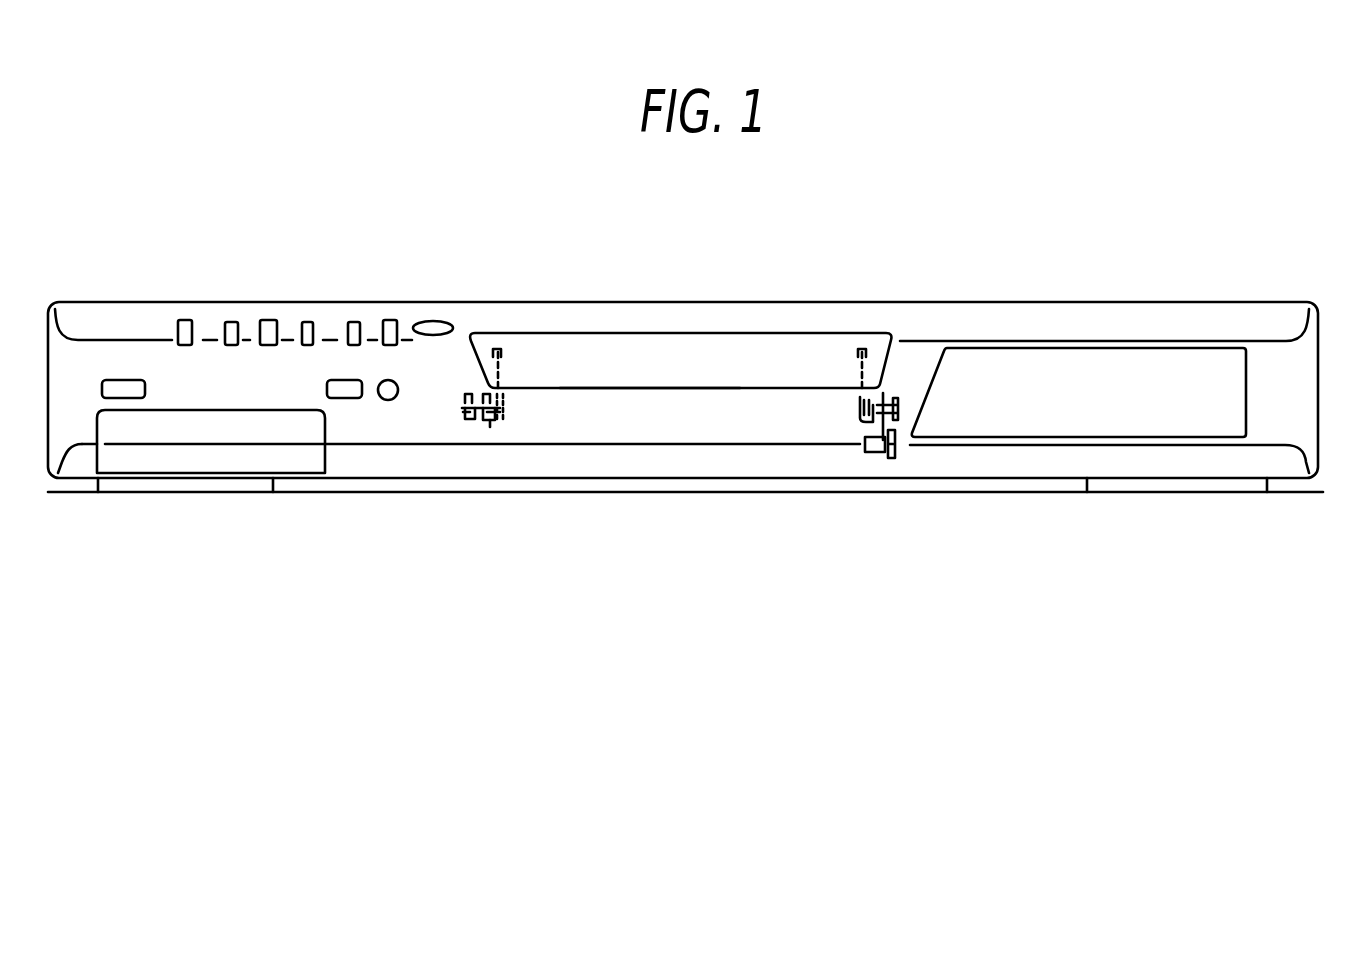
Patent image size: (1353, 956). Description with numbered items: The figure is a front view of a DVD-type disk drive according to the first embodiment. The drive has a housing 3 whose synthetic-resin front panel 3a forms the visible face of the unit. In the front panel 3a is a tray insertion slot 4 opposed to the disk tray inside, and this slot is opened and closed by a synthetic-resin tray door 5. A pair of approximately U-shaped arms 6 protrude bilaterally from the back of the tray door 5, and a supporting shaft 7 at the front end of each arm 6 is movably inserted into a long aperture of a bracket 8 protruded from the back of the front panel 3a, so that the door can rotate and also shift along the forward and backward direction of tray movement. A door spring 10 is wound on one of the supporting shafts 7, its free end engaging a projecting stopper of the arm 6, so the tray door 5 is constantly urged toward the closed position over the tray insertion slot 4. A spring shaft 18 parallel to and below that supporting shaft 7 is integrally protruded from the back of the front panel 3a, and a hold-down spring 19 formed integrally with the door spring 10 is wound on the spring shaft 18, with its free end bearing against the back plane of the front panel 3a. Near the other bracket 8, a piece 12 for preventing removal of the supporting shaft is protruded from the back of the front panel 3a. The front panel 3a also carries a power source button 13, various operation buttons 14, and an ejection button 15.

The housing 3 is at (986, 300).
The front panel 3a is at (698, 318).
The tray insertion slot 4 is at (640, 383).
The tray door 5 is at (593, 355).
The arms 6 is at (506, 355).
The supporting shaft 7 is at (482, 425).
The brackets 8 is at (492, 425).
The door spring 10 is at (858, 418).
The piece for preventing removal of the supporting shaft 12 is at (462, 418).
The power source button 13 is at (145, 390).
The operation buttons 14 is at (390, 322).
The ejection button 15 is at (433, 319).
The spring shaft 18 is at (863, 446).
The hold-down spring 19 is at (889, 457).